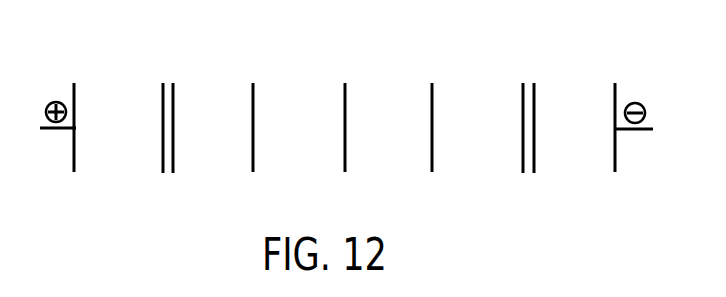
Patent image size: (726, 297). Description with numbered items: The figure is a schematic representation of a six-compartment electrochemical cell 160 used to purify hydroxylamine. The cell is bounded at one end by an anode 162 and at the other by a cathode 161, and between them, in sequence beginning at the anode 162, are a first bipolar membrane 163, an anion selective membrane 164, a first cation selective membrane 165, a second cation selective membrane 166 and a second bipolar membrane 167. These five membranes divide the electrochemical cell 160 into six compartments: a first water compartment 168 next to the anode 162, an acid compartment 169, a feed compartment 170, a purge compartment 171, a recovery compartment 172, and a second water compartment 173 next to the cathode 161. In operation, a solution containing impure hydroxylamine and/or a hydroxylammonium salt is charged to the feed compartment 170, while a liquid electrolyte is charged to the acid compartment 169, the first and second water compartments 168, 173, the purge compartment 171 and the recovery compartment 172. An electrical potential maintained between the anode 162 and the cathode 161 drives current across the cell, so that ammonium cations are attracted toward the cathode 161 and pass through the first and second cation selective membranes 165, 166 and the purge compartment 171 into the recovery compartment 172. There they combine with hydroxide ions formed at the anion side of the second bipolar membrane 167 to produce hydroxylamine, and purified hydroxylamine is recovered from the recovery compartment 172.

The electrochemical cell 160 is at (346, 103).
The cathode 161 is at (627, 114).
The anode 162 is at (66, 114).
The first bipolar membrane 163 is at (171, 130).
The anion selective membrane 164 is at (254, 130).
The first cation selective membrane 165 is at (347, 130).
The second cation selective membrane 166 is at (437, 130).
The second bipolar membrane 167 is at (531, 130).
The first water compartment 168 is at (120, 164).
The acid compartment 169 is at (218, 164).
The feed compartment 170 is at (304, 164).
The purge compartment 171 is at (390, 164).
The recovery compartment 172 is at (482, 164).
The second water compartment 173 is at (580, 164).